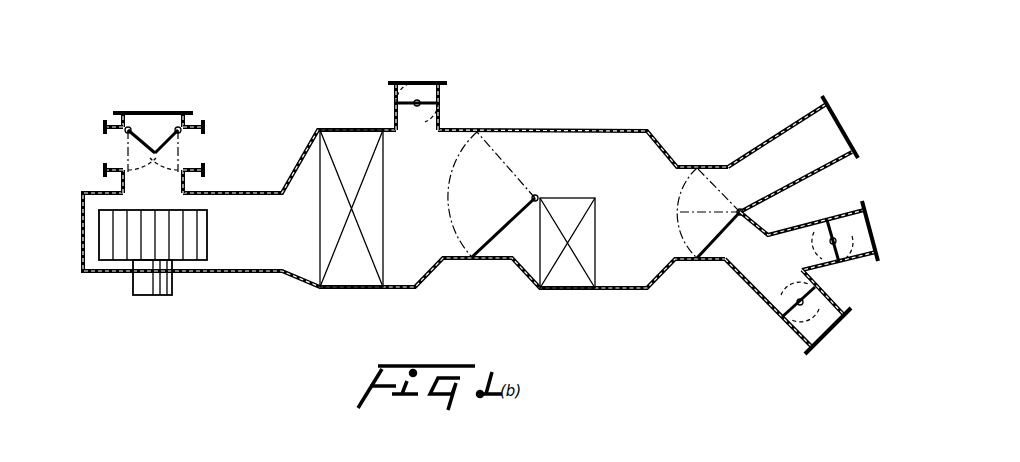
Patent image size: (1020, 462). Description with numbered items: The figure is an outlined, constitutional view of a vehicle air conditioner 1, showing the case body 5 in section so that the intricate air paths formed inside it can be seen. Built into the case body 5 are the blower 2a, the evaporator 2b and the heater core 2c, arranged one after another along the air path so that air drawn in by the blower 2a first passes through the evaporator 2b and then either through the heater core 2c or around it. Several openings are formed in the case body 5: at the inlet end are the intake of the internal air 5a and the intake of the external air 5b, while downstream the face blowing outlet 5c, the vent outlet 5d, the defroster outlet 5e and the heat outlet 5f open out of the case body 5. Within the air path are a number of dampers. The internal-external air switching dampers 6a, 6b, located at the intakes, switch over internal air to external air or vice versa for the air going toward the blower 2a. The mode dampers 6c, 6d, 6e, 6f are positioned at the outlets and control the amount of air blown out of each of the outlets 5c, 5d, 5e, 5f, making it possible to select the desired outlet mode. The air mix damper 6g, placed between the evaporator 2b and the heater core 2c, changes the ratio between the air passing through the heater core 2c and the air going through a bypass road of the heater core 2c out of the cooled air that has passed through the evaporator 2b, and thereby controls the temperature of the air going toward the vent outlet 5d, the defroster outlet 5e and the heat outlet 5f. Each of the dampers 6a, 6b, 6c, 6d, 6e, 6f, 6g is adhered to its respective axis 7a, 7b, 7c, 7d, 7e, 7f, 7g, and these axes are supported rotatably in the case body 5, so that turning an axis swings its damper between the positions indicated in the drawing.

The vehicle air conditioner 1 is at (472, 201).
The case body 5 is at (597, 131).
The intake of the internal air 5a is at (121, 150).
The intake of the external air 5b is at (130, 114).
The face blowing outlet 5c is at (398, 81).
The vent outlet 5d is at (827, 133).
The defroster outlet 5e is at (866, 228).
The heat outlet 5f is at (818, 325).
The internal-external air switching damper 6a is at (140, 138).
The internal-external air switching damper 6b is at (167, 135).
The mode damper 6c is at (422, 99).
The mode damper 6d is at (715, 245).
The mode damper 6e is at (838, 220).
The mode damper 6f is at (797, 325).
The air mix damper 6g is at (500, 230).
The axis 7a is at (124, 131).
The axis 7b is at (182, 131).
The axis 7c is at (417, 107).
The axis 7d is at (741, 208).
The axis 7e is at (834, 246).
The axis 7f is at (796, 305).
The axis 7g is at (537, 195).
The blower 2a is at (153, 297).
The evaporator 2b is at (350, 276).
The heater core 2c is at (570, 273).